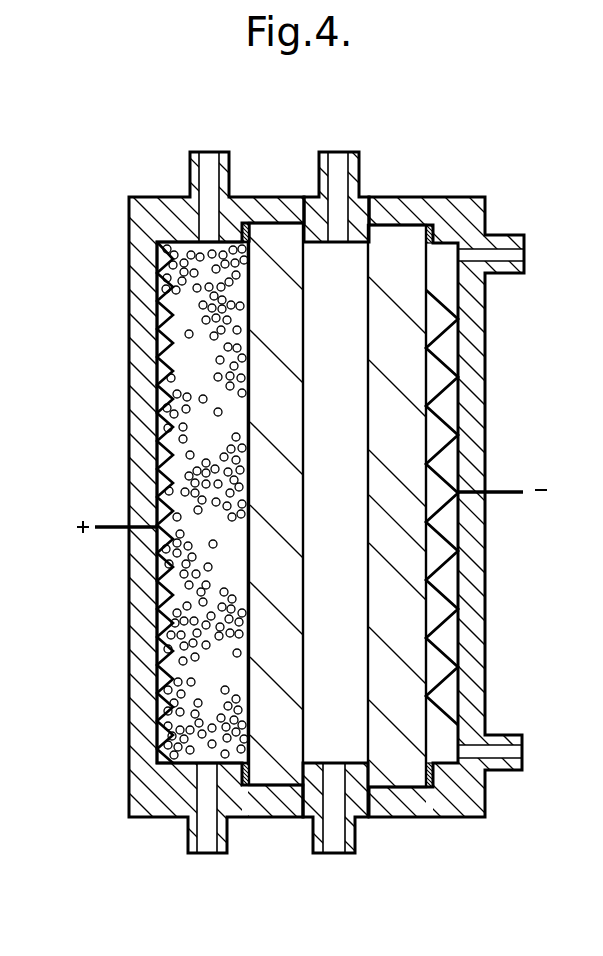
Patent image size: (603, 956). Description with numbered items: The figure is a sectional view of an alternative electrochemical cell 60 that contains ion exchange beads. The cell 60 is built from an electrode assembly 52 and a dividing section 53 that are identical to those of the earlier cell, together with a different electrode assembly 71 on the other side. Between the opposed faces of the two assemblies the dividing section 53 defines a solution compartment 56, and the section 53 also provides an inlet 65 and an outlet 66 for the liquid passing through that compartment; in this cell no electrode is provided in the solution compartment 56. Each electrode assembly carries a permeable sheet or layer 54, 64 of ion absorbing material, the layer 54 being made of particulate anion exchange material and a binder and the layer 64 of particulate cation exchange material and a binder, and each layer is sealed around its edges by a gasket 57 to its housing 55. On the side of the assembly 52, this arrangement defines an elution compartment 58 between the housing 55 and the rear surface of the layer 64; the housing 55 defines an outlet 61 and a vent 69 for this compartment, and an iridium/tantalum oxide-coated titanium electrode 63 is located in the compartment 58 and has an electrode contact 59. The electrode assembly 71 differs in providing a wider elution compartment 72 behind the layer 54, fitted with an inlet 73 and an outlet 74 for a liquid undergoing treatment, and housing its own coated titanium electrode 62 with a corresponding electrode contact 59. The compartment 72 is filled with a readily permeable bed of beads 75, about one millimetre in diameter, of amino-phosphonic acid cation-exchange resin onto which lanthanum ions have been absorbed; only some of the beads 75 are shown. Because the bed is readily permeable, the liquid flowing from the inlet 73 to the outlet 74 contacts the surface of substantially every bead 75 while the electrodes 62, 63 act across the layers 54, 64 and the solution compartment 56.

The electrochemical cell 60 is at (440, 128).
The electrode assembly 71 is at (176, 195).
The electrode assembly 52 is at (440, 196).
The dividing section 53 is at (358, 205).
The outlet 66 is at (338, 162).
The outlet 74 is at (210, 162).
The inlet 73 is at (208, 835).
The inlet 65 is at (335, 842).
The gasket 57 is at (245, 228).
The vent 69 is at (517, 255).
The outlet 61 is at (513, 752).
The permeable layer of ion absorbing material 54 is at (290, 775).
The permeable layer of ion absorbing material 64 is at (415, 775).
The solution compartment 56 is at (352, 613).
The electrode 62 is at (158, 462).
The elution compartment 72 is at (166, 388).
The beads 75 is at (217, 723).
The elution compartment 58 is at (452, 403).
The electrode 63 is at (458, 427).
The housing 55 is at (472, 678).
The electrode contact 59 is at (113, 528).